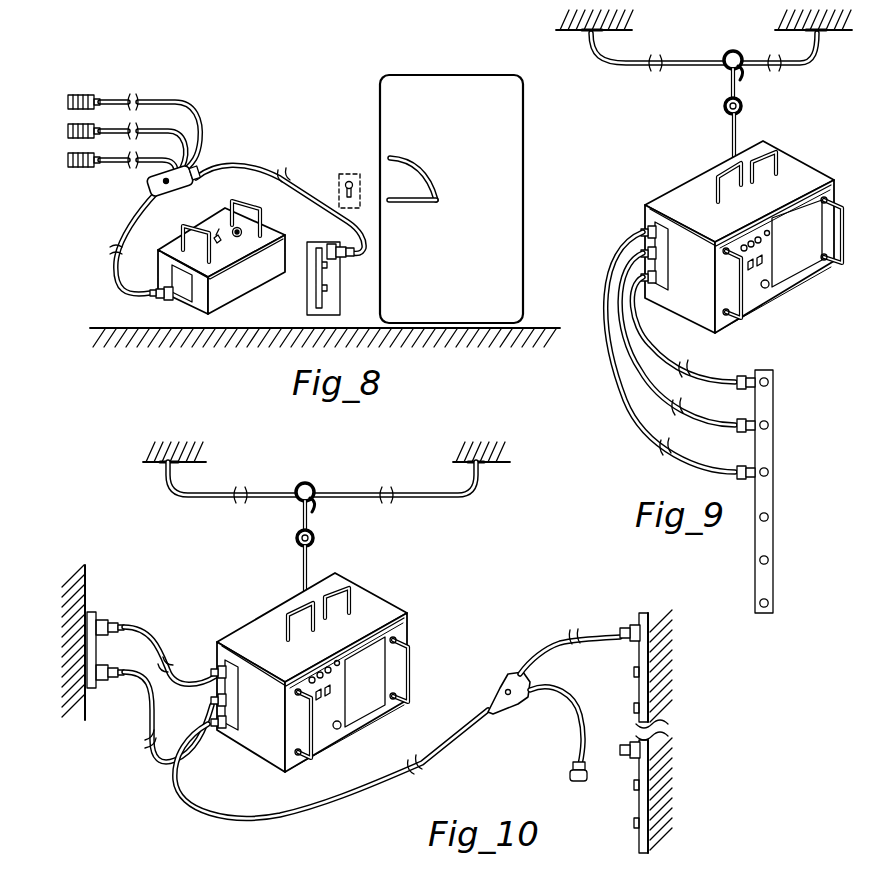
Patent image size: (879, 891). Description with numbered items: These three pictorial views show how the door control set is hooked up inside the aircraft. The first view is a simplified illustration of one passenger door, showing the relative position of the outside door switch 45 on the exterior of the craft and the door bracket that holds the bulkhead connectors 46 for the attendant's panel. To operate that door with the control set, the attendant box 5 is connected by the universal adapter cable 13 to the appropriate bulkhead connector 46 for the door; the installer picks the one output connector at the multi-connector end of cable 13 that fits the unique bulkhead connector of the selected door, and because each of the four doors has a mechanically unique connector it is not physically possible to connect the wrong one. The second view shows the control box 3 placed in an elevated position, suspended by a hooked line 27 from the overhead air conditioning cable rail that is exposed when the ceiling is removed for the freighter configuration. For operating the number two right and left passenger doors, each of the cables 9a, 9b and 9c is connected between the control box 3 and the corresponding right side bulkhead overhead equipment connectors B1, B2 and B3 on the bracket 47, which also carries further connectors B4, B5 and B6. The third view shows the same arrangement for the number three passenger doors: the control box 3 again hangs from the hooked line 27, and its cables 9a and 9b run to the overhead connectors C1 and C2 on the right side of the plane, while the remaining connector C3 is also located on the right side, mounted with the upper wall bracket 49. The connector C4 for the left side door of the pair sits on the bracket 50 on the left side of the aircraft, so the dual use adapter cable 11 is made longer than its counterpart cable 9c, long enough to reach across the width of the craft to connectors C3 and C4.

In FIG. 9, the control box 3 is at (690, 180).
In FIG. 10, the control box 3 is at (270, 612).
In FIG. 8, the attendant box 5 is at (206, 223).
In FIG. 9, the cable 9a is at (684, 364).
In FIG. 10, the cable 9a is at (160, 762).
In FIG. 9, the cable 9b is at (649, 426).
In FIG. 10, the cable 9b is at (176, 648).
In FIG. 9, the cable 9c is at (642, 369).
In FIG. 10, the dual use adapter cable 11 is at (426, 752).
In FIG. 8, the universal cable 13 is at (155, 171).
In FIG. 9, the hooked line 27 is at (742, 105).
In FIG. 10, the hooked line 27 is at (314, 535).
In FIG. 8, the outside door switch 45 is at (339, 184).
In FIG. 8, the bulkhead connector 46 is at (310, 276).
In FIG. 9, the bracket 47 is at (766, 370).
In FIG. 10, the upper wall panel 49 is at (641, 616).
In FIG. 10, the bracket 50 is at (643, 846).
In FIG. 9, the overhead equipment connector B1 is at (749, 376).
In FIG. 9, the overhead equipment connector B2 is at (749, 419).
In FIG. 9, the overhead equipment connector B3 is at (747, 464).
In FIG. 9, the beverage connection 4 B4 is at (769, 517).
In FIG. 9, the beverage connection 5 B5 is at (769, 560).
In FIG. 9, the beverage connection 6 B6 is at (769, 603).
In FIG. 10, the overhead connector C1 is at (110, 618).
In FIG. 10, the overhead connector C2 is at (106, 683).
In FIG. 10, the connector C3 is at (633, 646).
In FIG. 10, the connector C4 is at (633, 762).